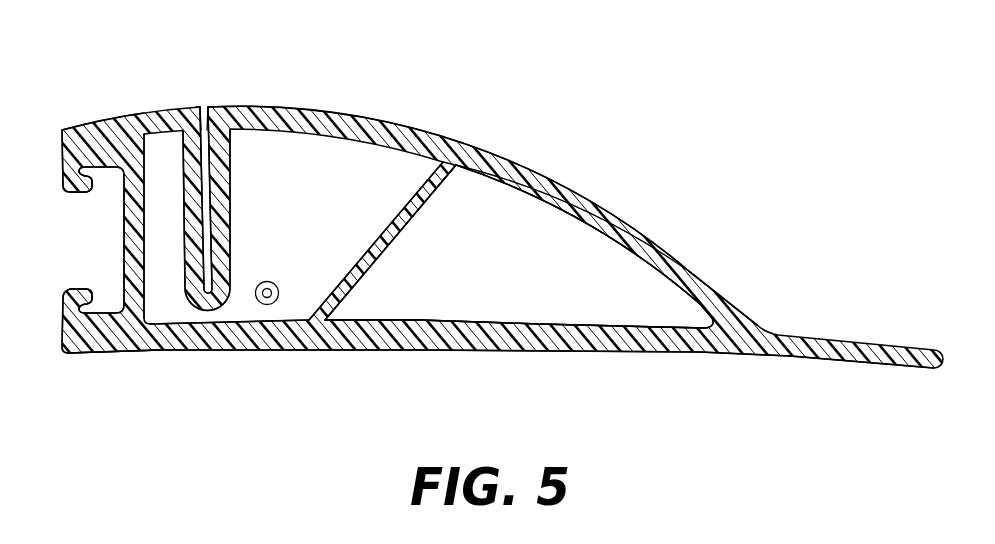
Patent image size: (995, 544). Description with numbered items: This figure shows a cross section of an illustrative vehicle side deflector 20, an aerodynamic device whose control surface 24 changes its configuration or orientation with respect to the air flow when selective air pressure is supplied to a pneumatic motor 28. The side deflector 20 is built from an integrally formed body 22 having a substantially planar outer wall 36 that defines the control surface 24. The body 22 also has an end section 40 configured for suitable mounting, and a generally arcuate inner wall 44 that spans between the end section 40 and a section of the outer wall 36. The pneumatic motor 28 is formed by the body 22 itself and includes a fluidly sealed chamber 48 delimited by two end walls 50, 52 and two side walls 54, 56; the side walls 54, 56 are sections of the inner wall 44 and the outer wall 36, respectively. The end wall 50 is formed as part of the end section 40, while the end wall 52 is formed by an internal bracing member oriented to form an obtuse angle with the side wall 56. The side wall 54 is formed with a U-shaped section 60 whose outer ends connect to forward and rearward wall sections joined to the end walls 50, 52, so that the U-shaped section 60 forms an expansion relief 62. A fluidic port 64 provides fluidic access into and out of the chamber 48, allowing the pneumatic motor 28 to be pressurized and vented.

The side deflector 20 is at (638, 112).
The body 22 is at (99, 131).
The control surface 24 is at (575, 351).
The pneumatic motor 28 is at (213, 99).
The outer wall 36 is at (507, 338).
The end section 40 is at (92, 230).
The inner wall 44 is at (543, 180).
The chamber 48 is at (380, 168).
The end wall 50 is at (124, 248).
The end wall 52 is at (352, 284).
The side wall 54 is at (239, 103).
The side wall 56 is at (183, 355).
The U-shaped section 60 is at (231, 202).
The expansion relief 62 is at (201, 106).
The fluidic port 64 is at (267, 305).